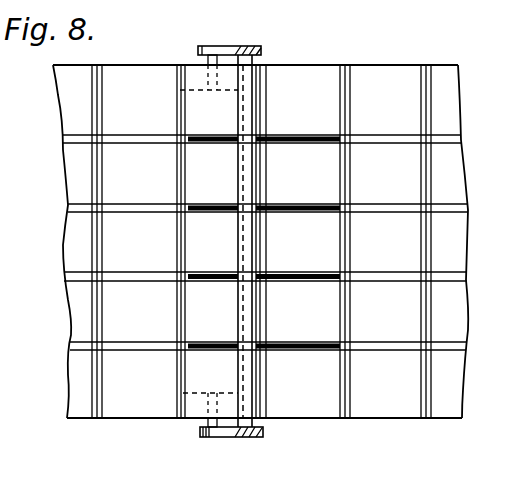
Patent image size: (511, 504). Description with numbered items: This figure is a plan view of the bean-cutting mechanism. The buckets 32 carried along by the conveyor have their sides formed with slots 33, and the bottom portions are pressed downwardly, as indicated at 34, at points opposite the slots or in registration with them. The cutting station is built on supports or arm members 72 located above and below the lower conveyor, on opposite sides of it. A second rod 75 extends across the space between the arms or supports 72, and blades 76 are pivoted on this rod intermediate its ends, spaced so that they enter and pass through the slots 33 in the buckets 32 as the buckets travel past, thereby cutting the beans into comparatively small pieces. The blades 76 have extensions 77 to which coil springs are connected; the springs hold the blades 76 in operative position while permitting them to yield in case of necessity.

The bucket 32 is at (381, 66).
The slot 33 is at (176, 211).
The pressed-down bottom portion 34 is at (128, 136).
The support or arm member 72 is at (238, 437).
The second rod 75 is at (253, 175).
The blade 76 is at (207, 146).
The blade extension 77 is at (262, 48).